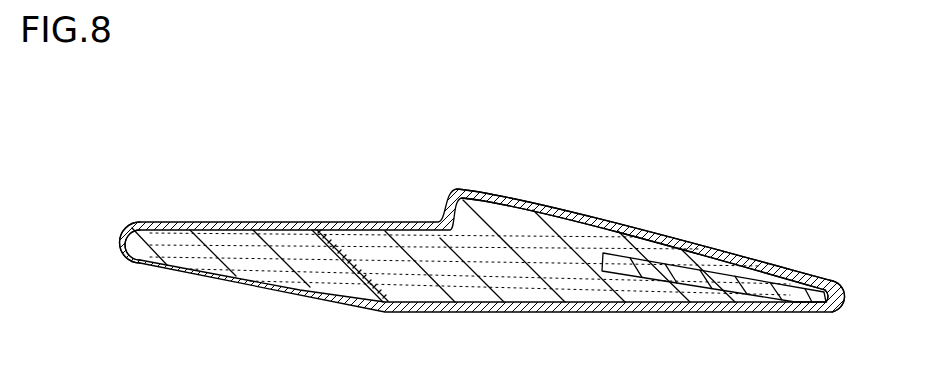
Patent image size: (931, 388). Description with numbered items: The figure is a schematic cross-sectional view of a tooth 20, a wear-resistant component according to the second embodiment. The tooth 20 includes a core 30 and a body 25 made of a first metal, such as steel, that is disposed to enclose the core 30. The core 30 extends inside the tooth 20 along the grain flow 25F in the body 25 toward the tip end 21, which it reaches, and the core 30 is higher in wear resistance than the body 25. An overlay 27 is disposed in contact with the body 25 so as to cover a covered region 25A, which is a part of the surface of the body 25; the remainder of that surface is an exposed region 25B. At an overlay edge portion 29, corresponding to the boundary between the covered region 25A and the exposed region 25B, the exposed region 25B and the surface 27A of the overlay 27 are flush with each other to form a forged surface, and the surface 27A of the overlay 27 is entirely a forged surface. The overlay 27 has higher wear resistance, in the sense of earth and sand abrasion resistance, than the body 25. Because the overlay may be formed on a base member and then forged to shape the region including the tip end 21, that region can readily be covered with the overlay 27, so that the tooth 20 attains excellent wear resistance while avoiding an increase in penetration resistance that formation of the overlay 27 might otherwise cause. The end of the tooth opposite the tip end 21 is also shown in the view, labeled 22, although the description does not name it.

The tooth 20 is at (712, 150).
The tip end 21 is at (848, 300).
The leading end portion 22 is at (123, 249).
The body 25 is at (215, 236).
The covered region 25A is at (618, 222).
The exposed region 25B is at (263, 224).
The grain flow 25F is at (506, 214).
The overlay 27 is at (461, 190).
The surface of the overlay 27A is at (572, 210).
The overlay edge portion 29 is at (308, 212).
The core 30 is at (719, 279).